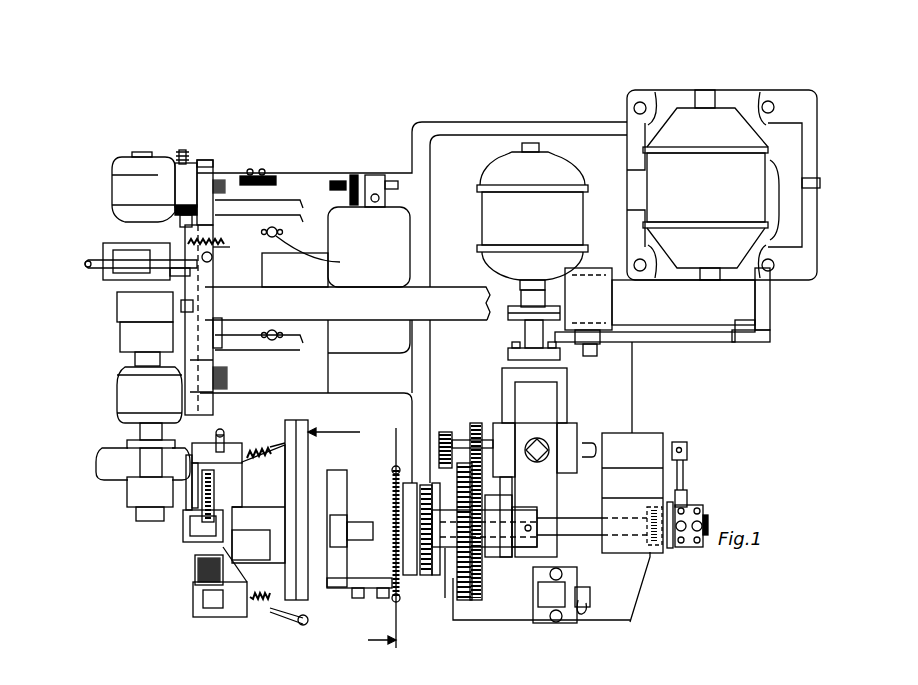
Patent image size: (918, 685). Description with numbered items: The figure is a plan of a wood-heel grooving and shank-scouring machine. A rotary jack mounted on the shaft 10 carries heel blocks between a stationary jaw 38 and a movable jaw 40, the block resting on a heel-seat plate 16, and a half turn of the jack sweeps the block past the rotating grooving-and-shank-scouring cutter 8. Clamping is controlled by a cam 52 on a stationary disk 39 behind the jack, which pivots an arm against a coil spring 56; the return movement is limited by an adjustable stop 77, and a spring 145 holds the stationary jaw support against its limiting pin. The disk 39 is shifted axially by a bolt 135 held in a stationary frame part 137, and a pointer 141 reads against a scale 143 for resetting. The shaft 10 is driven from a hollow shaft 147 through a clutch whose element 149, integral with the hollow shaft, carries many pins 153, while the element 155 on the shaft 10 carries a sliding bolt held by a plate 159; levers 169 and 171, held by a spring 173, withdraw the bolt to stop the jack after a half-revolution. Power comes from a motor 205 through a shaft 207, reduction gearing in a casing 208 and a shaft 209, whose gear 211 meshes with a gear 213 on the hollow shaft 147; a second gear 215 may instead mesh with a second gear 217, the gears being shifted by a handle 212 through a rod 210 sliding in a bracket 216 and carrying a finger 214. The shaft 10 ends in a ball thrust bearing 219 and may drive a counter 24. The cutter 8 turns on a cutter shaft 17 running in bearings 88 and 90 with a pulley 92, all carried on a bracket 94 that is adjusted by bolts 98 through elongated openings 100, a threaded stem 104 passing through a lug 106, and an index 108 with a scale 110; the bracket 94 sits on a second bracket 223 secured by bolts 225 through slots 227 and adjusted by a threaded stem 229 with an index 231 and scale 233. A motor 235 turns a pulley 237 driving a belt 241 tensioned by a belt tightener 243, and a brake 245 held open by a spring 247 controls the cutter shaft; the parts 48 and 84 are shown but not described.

The grooving-and-shank-scouring cutter 8 is at (108, 470).
The shaft 10 is at (568, 528).
The heel-seat plate 16 is at (96, 600).
The cutter shaft 17 is at (135, 445).
The counter 24 is at (650, 445).
The stationary jaw 38 is at (186, 528).
The stationary disk 39 is at (312, 440).
The movable jaw 40 is at (195, 558).
The pin 48 is at (298, 615).
The cam 52 is at (290, 485).
The coil spring 56 is at (252, 440).
The adjustable stop 77 is at (190, 455).
The plate 84 is at (200, 585).
The bearing 88 is at (125, 390).
The bearing 90 is at (120, 185).
The pulley 92 is at (125, 335).
The bracket 94 is at (216, 440).
The bolts 98 is at (220, 172).
The elongated openings 100 is at (230, 370).
The threaded stem 104 is at (222, 213).
The lug 106 is at (186, 160).
The index 108 is at (186, 305).
The scale 110 is at (215, 325).
The bolt 135 is at (362, 525).
The stationary part 137 is at (336, 485).
The pointer 141 is at (378, 580).
The scale 143 is at (410, 578).
The spring 145 is at (200, 500).
The hollow shaft 147 is at (455, 588).
The clutch element 149 is at (424, 578).
The pins 153 is at (440, 430).
The clutch element 155 is at (749, 669).
The plate 159 is at (697, 676).
The lever 169 is at (432, 578).
The lever 171 is at (472, 430).
The spring 173 is at (410, 395).
The motor 205 is at (548, 160).
The shaft 207 is at (500, 272).
The casing 208 is at (540, 415).
The shaft 209 is at (478, 424).
The rod 210 is at (582, 608).
The gear 211 is at (476, 425).
The handle 212 is at (582, 602).
The gear 213 is at (480, 595).
The finger 214 is at (525, 535).
The second gear 215 is at (450, 430).
The bracket 216 is at (556, 592).
The second gear 217 is at (478, 600).
The ball thrust bearing 219 is at (672, 550).
The second bracket 223 is at (300, 425).
The bolts 225 is at (290, 272).
The slots 227 is at (282, 232).
The threaded stem 229 is at (376, 176).
The index 231 is at (256, 175).
The scale 233 is at (338, 180).
The motor 235 is at (718, 128).
The pulley 237 is at (688, 322).
The belt 241 is at (385, 280).
The belt tightener 243 is at (588, 272).
The brake 245 is at (108, 250).
The spring 247 is at (220, 255).